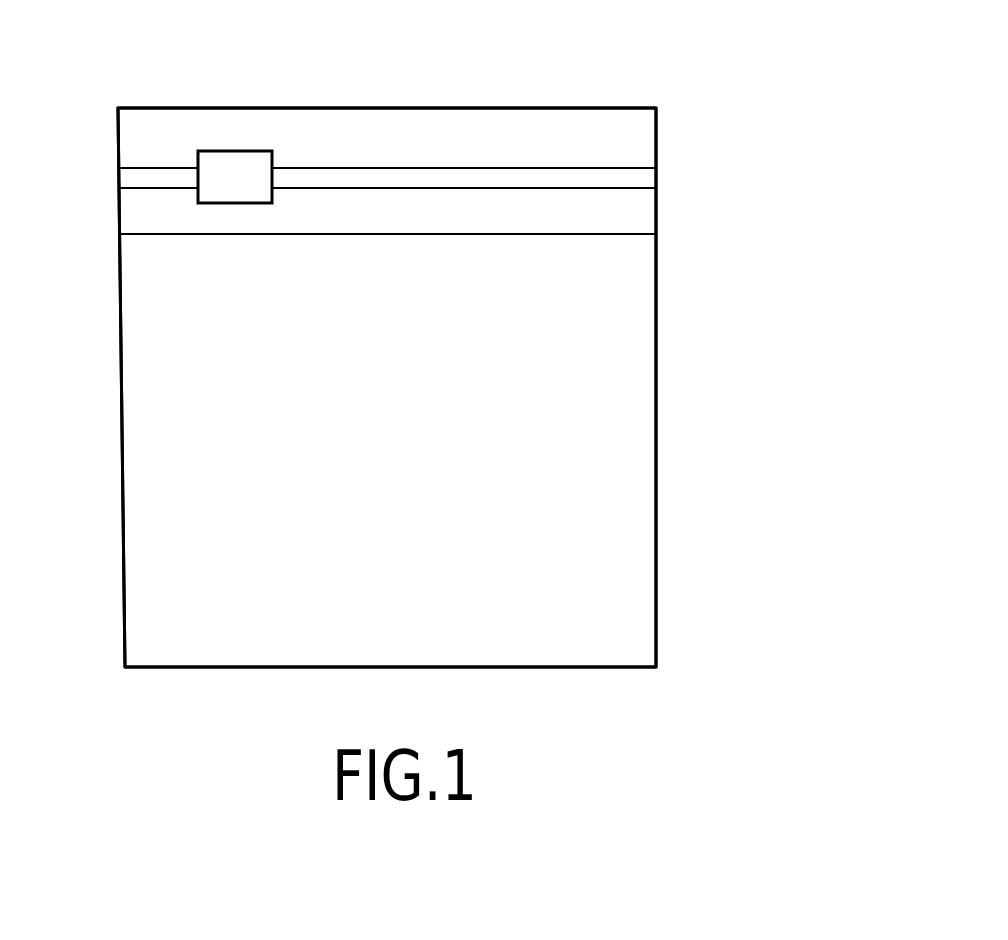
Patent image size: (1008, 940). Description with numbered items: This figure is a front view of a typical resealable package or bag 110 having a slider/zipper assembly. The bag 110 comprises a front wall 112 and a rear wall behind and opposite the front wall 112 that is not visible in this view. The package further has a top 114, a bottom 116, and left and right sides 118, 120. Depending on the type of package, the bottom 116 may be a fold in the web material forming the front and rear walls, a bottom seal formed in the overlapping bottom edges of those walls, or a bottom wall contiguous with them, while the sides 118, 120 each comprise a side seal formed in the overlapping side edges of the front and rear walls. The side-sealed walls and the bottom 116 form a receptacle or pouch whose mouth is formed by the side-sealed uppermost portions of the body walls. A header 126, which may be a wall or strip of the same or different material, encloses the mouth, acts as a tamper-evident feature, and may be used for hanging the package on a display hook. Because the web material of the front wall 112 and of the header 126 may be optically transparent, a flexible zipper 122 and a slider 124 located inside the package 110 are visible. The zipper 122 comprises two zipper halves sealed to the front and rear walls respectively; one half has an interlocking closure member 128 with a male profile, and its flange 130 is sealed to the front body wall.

The resealable package or bag 110 is at (798, 125).
The front wall 112 is at (636, 477).
The top 114 is at (578, 108).
The bottom 116 is at (582, 660).
The left side 118 is at (122, 426).
The right side 120 is at (658, 572).
The flexible zipper 122 is at (637, 180).
The slider 124 is at (233, 160).
The header 126 is at (143, 118).
The interlocking closure member 128 is at (455, 175).
The flange 130 is at (633, 243).